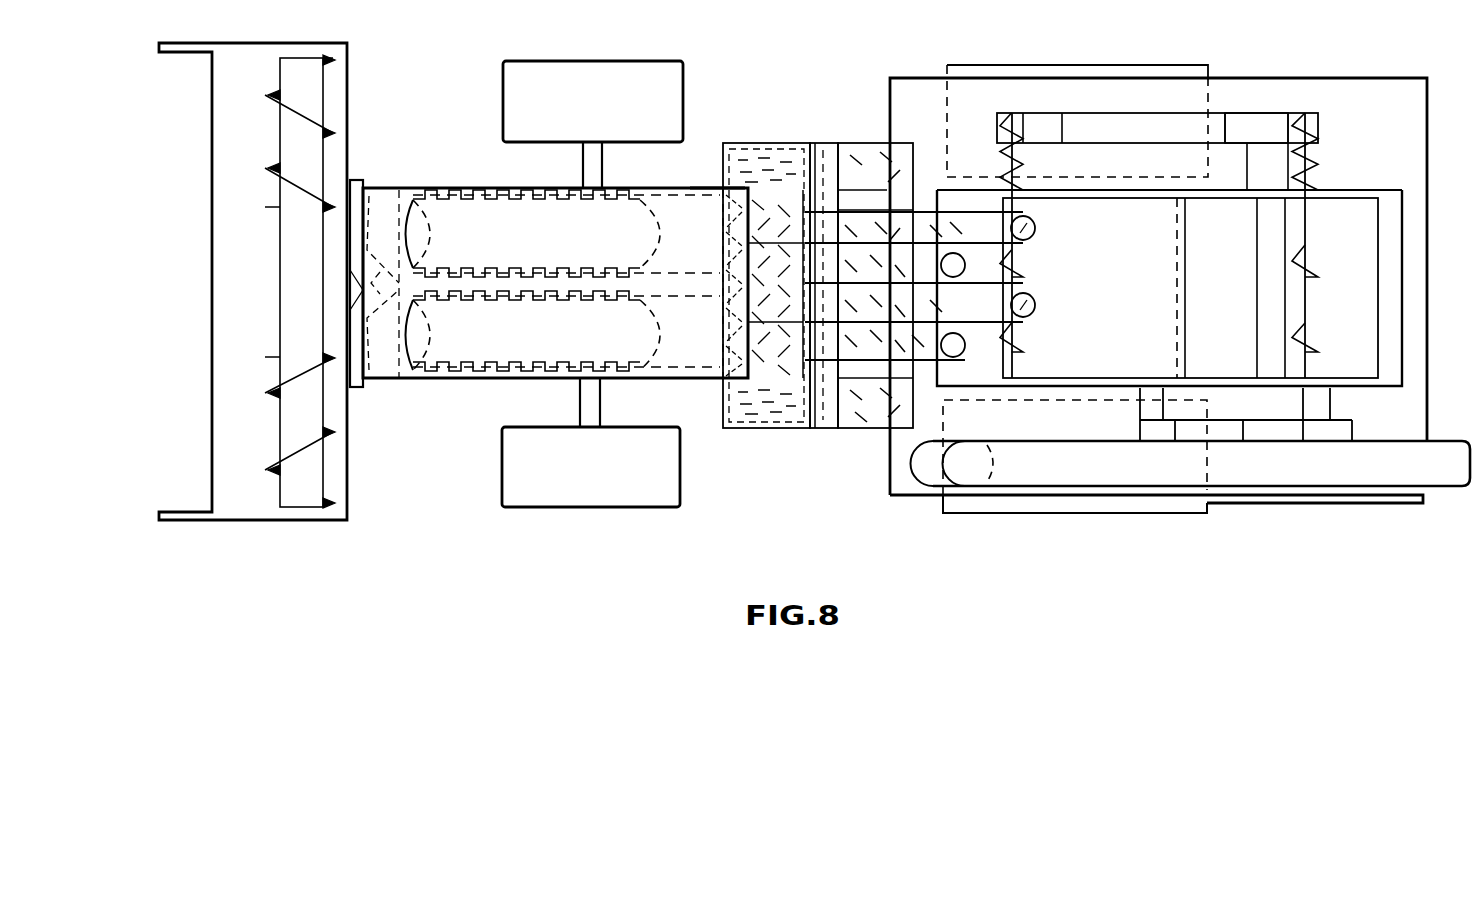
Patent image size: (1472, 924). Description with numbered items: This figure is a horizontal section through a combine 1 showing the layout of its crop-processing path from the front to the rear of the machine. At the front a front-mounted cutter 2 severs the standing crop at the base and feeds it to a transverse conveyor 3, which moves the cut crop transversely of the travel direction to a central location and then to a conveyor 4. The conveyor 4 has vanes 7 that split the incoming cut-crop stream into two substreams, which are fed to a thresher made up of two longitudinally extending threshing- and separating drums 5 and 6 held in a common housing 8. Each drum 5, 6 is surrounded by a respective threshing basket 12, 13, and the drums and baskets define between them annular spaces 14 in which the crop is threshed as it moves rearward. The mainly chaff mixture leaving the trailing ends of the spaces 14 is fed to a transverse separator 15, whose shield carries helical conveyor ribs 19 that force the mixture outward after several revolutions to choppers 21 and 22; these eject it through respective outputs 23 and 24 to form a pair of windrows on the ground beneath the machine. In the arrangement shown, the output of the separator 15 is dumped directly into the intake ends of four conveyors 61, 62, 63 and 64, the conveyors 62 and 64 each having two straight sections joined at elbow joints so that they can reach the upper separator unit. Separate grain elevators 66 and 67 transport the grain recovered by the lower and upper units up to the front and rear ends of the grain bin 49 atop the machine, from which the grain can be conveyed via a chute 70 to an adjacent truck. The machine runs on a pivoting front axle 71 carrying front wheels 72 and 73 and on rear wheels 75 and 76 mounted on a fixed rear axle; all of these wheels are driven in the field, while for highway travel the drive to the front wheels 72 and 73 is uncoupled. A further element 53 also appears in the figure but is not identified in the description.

The combine 1 is at (1233, 78).
The front-mounted cutter 2 is at (212, 490).
The transverse conveyor 3 is at (293, 488).
The conveyor 4 is at (382, 207).
The threshing- and separating drum 5 is at (460, 340).
The threshing- and separating drum 6 is at (480, 220).
The vanes 7 is at (372, 343).
The common housing 8 is at (690, 188).
The threshing basket 12 is at (487, 375).
The threshing basket 13 is at (507, 190).
The annular spaces 14 is at (452, 193).
The separator 15 is at (762, 197).
The helical conveyor ribs 19 is at (763, 353).
The chopper 21 is at (762, 410).
The chopper 22 is at (802, 150).
The output 23 is at (857, 430).
The output 24 is at (858, 143).
The grain bin 49 is at (1113, 160).
The support bracket 53 is at (1268, 432).
The conveyor 61 is at (925, 348).
The conveyor 62 is at (980, 312).
The conveyor 63 is at (930, 223).
The conveyor 64 is at (958, 225).
The grain elevator 66 is at (1038, 123).
The grain elevator 67 is at (1257, 125).
The chute 70 is at (1455, 475).
The pivoting front axle 71 is at (588, 412).
The front wheel 72 is at (535, 492).
The front wheel 73 is at (663, 90).
The rear wheel 75 is at (1073, 505).
The rear wheel 76 is at (1033, 75).